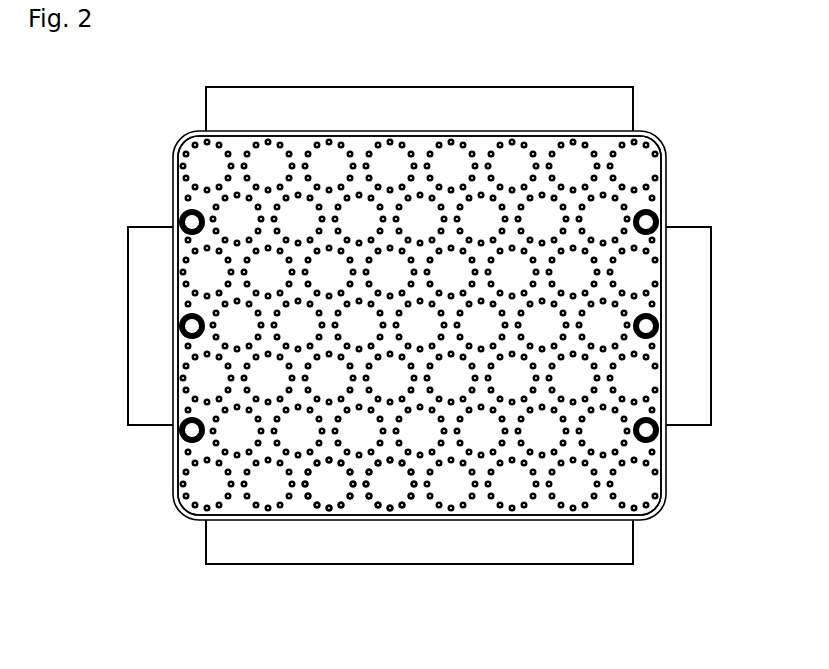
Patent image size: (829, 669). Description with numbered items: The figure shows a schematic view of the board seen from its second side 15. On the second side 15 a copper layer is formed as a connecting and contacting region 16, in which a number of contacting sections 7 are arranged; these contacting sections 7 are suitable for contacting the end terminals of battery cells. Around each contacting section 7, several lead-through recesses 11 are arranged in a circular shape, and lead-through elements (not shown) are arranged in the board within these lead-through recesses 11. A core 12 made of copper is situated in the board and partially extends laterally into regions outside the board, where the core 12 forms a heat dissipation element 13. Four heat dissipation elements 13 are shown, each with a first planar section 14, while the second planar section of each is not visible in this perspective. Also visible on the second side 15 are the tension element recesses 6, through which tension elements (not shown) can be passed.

The tension element recess 6 is at (190, 214).
The contacting section 7 is at (330, 490).
The lead-through recess 11 is at (415, 498).
The core 12 is at (353, 108).
The heat dissipation element 13 is at (405, 105).
The first planar section 14 is at (452, 104).
The second side 15 is at (653, 200).
The connecting and contacting region 16 is at (601, 152).